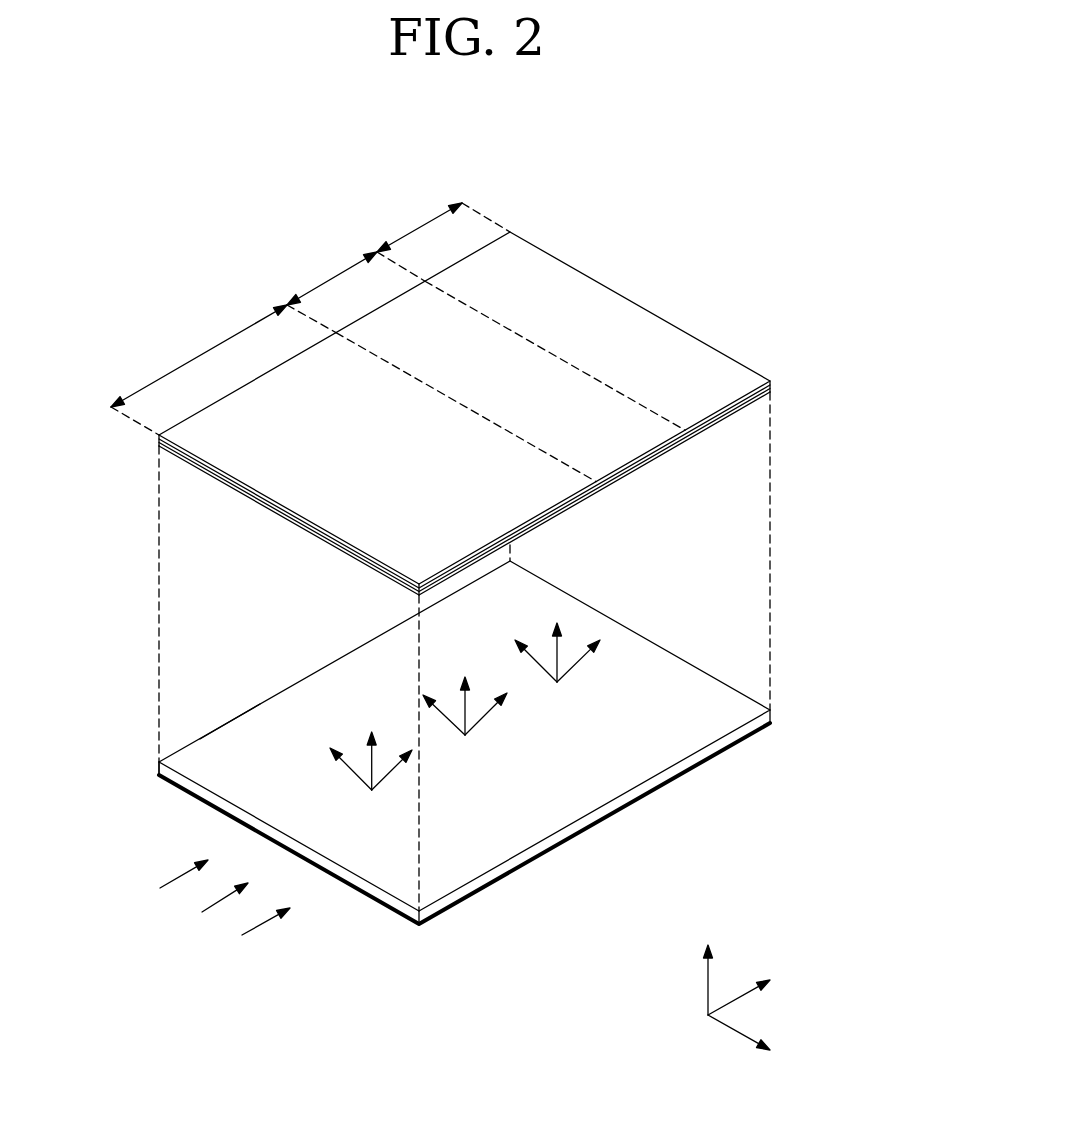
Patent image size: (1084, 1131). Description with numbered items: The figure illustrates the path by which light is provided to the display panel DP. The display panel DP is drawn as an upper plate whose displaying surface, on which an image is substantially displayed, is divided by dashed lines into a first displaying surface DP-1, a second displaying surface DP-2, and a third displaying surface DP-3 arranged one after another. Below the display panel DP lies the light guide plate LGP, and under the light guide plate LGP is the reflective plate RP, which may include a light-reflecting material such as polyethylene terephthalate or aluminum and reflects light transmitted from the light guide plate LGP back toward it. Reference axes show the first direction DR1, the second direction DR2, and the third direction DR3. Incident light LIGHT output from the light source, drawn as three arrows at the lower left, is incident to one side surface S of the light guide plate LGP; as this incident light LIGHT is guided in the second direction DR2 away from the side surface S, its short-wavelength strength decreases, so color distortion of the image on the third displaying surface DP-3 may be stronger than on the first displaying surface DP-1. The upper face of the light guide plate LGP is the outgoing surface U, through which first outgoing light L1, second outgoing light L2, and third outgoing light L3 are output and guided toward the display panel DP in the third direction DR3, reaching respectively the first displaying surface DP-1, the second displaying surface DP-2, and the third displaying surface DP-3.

The display panel DP is at (750, 381).
The first displaying surface DP-1 is at (223, 370).
The second displaying surface DP-2 is at (355, 277).
The third displaying surface DP-3 is at (441, 225).
The light guide plate LGP is at (750, 710).
The reflective plate RP is at (743, 743).
The outgoing surface U is at (228, 733).
The side surface S is at (160, 772).
The first outgoing light L1 is at (371, 747).
The second outgoing light L2 is at (465, 692).
The third outgoing light L3 is at (557, 639).
The incident light LIGHT is at (211, 897).
The first direction DR1 is at (760, 1041).
The second direction DR2 is at (760, 992).
The third direction DR3 is at (708, 967).